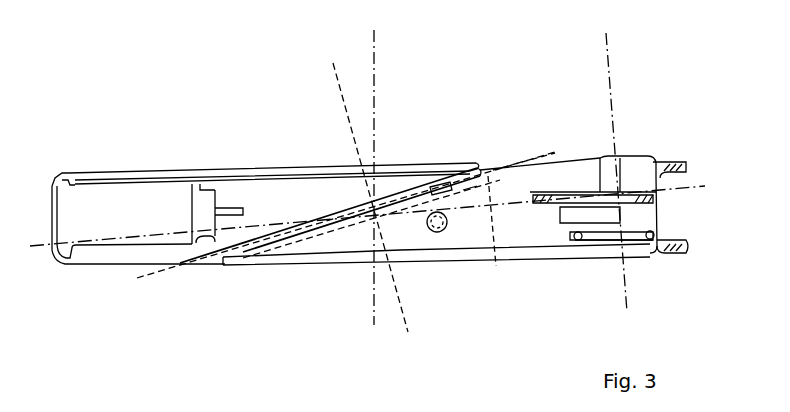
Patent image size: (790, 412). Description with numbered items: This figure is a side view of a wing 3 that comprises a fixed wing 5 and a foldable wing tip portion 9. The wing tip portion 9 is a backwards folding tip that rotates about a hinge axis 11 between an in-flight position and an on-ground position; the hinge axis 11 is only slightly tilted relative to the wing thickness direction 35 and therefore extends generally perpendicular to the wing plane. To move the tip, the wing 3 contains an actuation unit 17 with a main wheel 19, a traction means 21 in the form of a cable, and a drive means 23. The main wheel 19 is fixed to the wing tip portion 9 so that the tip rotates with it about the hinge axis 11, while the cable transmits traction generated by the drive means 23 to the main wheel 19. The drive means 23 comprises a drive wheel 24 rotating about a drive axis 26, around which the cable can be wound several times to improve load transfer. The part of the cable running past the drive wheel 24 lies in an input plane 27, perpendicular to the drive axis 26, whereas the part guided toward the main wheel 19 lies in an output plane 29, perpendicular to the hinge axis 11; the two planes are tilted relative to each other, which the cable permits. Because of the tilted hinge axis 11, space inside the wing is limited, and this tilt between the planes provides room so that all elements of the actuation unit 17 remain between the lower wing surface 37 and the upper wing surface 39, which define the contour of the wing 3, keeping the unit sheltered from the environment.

The wing 3 is at (518, 116).
The fixed wing 5 is at (525, 258).
The foldable wing tip portion 9 is at (98, 172).
The hinge axis 11 is at (340, 88).
The actuation unit 17 is at (578, 142).
The main wheel 19 is at (340, 262).
The traction means 21 is at (486, 256).
The drive means 23 is at (645, 255).
The drive wheel 24 is at (625, 152).
The drive axis 26 is at (609, 58).
The input plane 27 is at (660, 190).
The output plane 29 is at (176, 268).
The wing thickness direction 35 is at (376, 84).
The lower wing surface 37 is at (278, 265).
The upper wing surface 39 is at (253, 172).